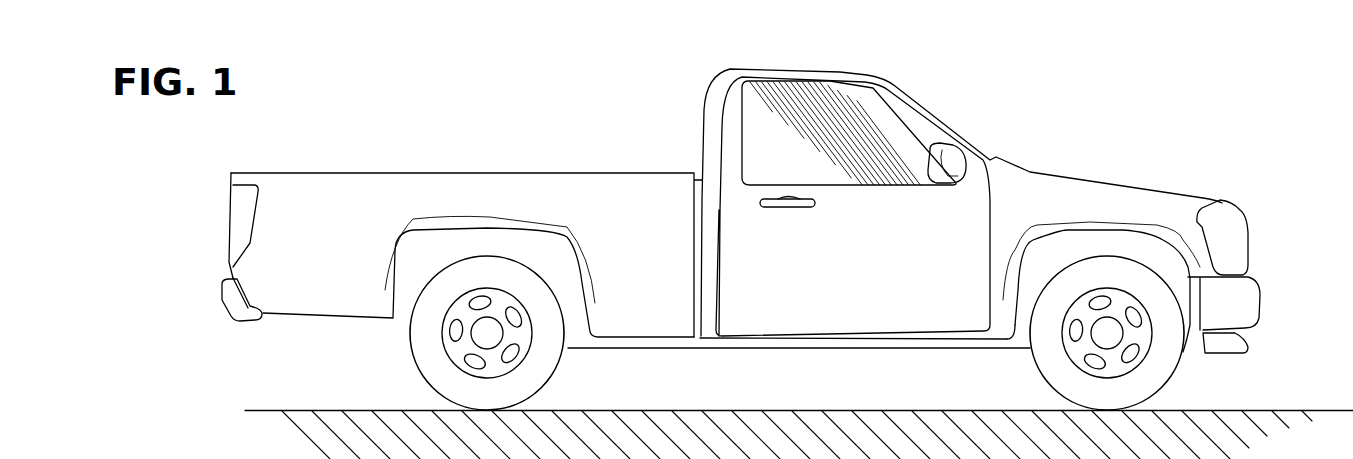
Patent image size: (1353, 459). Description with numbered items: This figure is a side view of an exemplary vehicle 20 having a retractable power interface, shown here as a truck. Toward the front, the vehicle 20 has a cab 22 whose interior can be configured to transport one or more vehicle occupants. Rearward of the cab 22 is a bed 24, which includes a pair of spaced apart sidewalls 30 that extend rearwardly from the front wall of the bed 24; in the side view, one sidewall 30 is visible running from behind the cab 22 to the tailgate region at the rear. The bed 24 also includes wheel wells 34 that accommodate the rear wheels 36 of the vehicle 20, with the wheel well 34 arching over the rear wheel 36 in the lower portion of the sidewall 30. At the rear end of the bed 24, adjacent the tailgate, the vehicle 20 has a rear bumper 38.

The vehicle 20 is at (1170, 108).
The cab 22 is at (932, 93).
The bed 24 is at (568, 95).
The sidewalls 30 is at (357, 188).
The wheel wells 34 is at (436, 248).
The rear wheels 36 is at (422, 347).
The rear bumper 38 is at (232, 305).